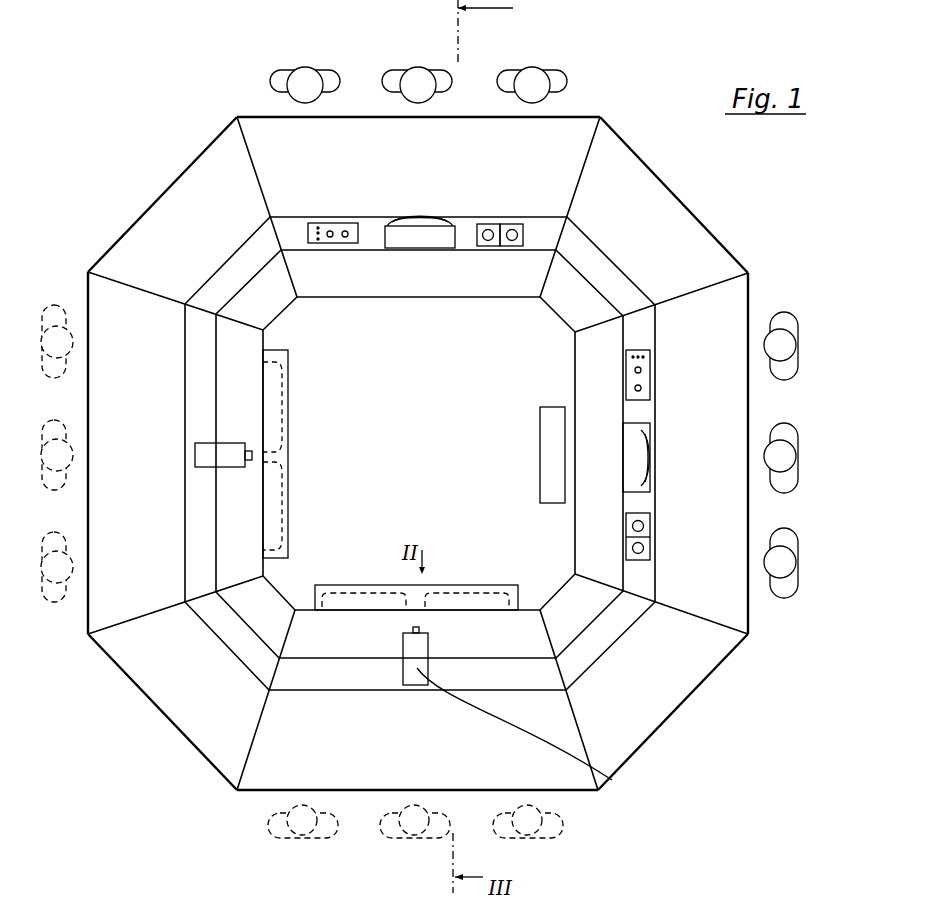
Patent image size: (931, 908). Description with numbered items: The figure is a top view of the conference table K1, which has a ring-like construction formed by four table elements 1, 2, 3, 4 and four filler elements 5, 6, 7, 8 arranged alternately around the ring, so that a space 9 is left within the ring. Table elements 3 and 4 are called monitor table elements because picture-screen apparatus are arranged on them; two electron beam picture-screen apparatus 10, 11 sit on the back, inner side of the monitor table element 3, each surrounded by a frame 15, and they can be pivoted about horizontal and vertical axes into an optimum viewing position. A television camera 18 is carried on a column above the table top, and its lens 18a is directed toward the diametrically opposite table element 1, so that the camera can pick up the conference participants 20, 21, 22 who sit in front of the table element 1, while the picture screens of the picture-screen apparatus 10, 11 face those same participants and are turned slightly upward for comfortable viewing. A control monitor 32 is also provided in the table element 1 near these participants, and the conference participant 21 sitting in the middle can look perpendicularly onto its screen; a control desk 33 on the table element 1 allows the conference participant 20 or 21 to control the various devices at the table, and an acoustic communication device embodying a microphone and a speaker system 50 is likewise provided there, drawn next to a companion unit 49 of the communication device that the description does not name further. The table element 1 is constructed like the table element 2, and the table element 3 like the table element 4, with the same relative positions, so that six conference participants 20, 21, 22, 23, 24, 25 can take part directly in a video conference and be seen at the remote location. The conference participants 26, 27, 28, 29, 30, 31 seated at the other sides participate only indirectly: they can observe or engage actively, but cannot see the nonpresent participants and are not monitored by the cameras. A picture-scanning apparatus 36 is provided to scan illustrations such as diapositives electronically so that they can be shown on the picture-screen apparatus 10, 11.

The conference table K1 is at (629, 86).
The table element 1 is at (476, 110).
The table element 2 is at (753, 297).
The monitor table element 3 is at (363, 797).
The monitor table element 4 is at (80, 513).
The filler element 5 is at (665, 212).
The filler element 6 is at (657, 713).
The filler element 7 is at (178, 712).
The filler element 8 is at (182, 192).
The space 9 is at (447, 425).
The electron beam picture-screen apparatus 10 is at (490, 597).
The electron beam picture-screen apparatus 11 is at (358, 597).
The frame 15 is at (410, 597).
The television camera 18 is at (531, 736).
The lens 18a is at (421, 627).
The conference participant 20 is at (284, 78).
The conference participant 21 is at (437, 76).
The conference participant 22 is at (553, 78).
The conference participant 23 is at (791, 366).
The conference participant 24 is at (790, 478).
The conference participant 25 is at (787, 590).
The conference participant 26 is at (522, 832).
The conference participant 27 is at (410, 830).
The conference participant 28 is at (290, 833).
The conference participant 29 is at (53, 593).
The conference participant 30 is at (58, 425).
The conference participant 31 is at (58, 306).
The control monitor 32 is at (422, 236).
The control desk 33 is at (340, 224).
The picture-scanning apparatus 36 is at (556, 420).
The loudspeaker 49 is at (489, 240).
The speaker system 50 is at (512, 240).